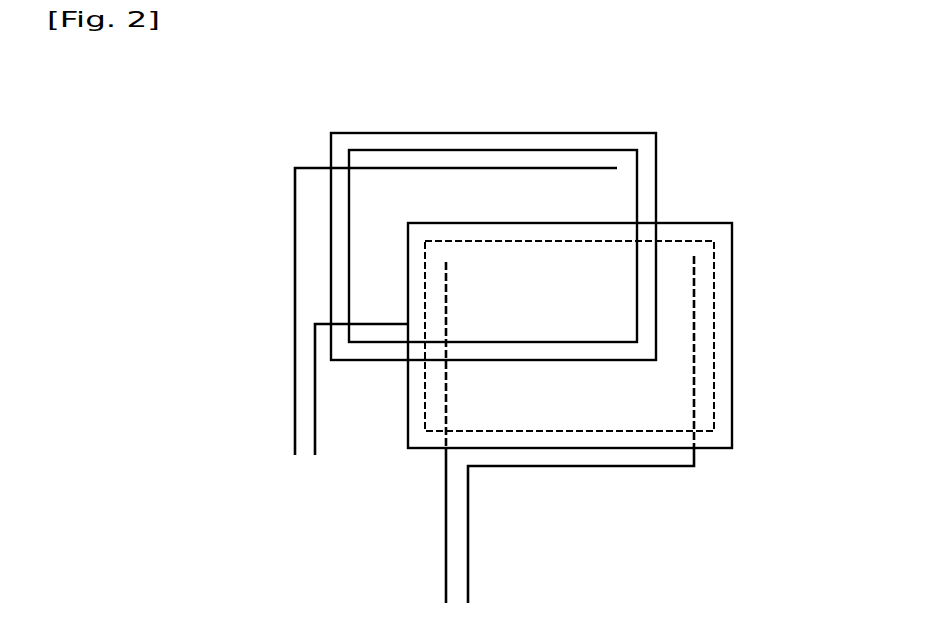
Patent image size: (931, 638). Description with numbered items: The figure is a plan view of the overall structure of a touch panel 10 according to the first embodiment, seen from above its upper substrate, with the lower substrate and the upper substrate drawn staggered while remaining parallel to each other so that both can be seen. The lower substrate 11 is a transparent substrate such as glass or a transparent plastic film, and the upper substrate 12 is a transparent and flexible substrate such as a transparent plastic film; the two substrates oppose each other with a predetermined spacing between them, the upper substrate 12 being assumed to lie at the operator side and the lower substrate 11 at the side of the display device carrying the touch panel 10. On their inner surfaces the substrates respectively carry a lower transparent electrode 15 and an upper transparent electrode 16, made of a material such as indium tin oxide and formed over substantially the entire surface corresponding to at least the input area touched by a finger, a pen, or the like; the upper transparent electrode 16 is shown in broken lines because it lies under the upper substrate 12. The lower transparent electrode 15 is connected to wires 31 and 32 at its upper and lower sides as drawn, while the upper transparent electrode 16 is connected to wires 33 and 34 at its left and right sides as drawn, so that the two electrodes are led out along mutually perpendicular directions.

The touch panel 10 is at (740, 165).
The lower substrate 11 is at (577, 124).
The upper substrate 12 is at (746, 262).
The lower transparent electrode 15 is at (440, 148).
The upper transparent electrode 16 is at (717, 339).
The wire 31 is at (295, 300).
The wire 32 is at (318, 425).
The wire 33 is at (446, 565).
The wire 34 is at (470, 563).